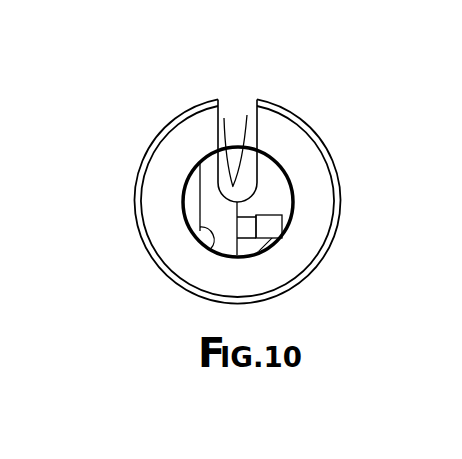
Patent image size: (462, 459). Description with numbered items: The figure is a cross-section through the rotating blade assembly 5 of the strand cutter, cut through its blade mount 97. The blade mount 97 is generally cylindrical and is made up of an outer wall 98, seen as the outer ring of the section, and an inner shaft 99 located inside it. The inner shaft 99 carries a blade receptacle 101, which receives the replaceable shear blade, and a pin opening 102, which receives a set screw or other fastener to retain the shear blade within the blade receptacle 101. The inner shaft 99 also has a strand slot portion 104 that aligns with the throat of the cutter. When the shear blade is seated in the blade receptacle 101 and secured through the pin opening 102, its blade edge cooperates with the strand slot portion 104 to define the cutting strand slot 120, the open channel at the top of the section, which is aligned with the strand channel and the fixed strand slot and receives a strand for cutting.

The rotating blade assembly 5 is at (205, 177).
The blade mount 97 is at (137, 93).
The outer wall 98 is at (137, 227).
The inner shaft 99 is at (299, 171).
The cutting strand slot 120 is at (224, 118).
The strand slot portion 104 is at (247, 115).
The pin opening 102 is at (258, 228).
The blade receptacle 101 is at (210, 248).